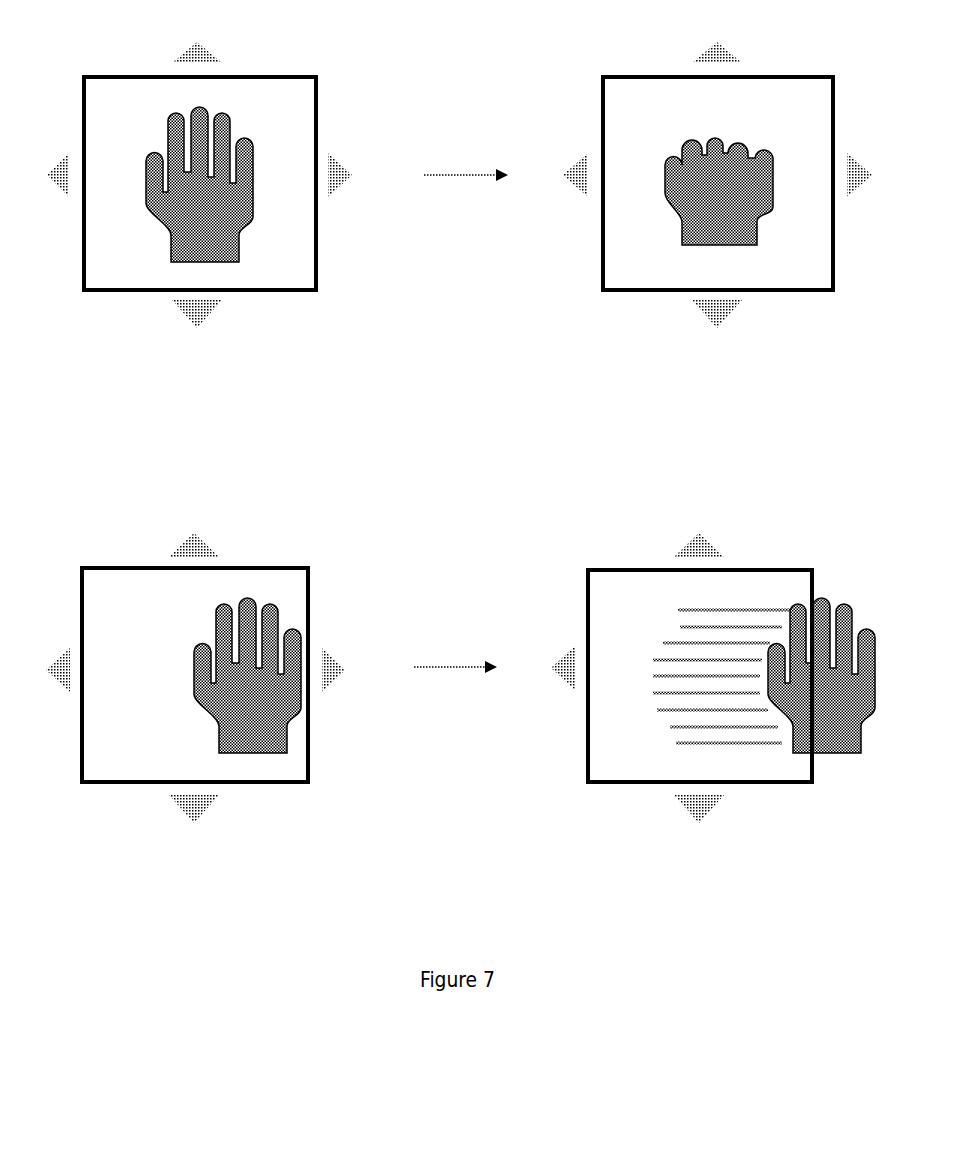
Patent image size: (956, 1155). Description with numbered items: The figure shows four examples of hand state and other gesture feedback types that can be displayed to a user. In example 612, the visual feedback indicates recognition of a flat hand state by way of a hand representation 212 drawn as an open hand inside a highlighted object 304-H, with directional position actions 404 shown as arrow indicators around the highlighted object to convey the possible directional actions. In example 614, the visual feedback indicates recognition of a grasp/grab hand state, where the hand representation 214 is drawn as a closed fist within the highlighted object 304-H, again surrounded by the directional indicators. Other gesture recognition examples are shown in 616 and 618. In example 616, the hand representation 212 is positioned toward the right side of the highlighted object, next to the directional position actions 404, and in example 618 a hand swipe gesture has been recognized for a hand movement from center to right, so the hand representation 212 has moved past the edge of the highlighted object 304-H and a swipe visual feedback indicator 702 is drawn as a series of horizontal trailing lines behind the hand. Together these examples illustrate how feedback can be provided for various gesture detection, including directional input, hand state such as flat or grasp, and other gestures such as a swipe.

The example 612 is at (152, 38).
The example 614 is at (622, 38).
The gesture recognition example 616 is at (152, 528).
The gesture recognition example 618 is at (622, 528).
The hand representation 212 is at (220, 226).
The hand representation 214 is at (733, 206).
The directional position actions 404 is at (342, 183).
The highlighted object 304-H is at (602, 262).
The swipe visual feedback indicator 702 is at (697, 670).